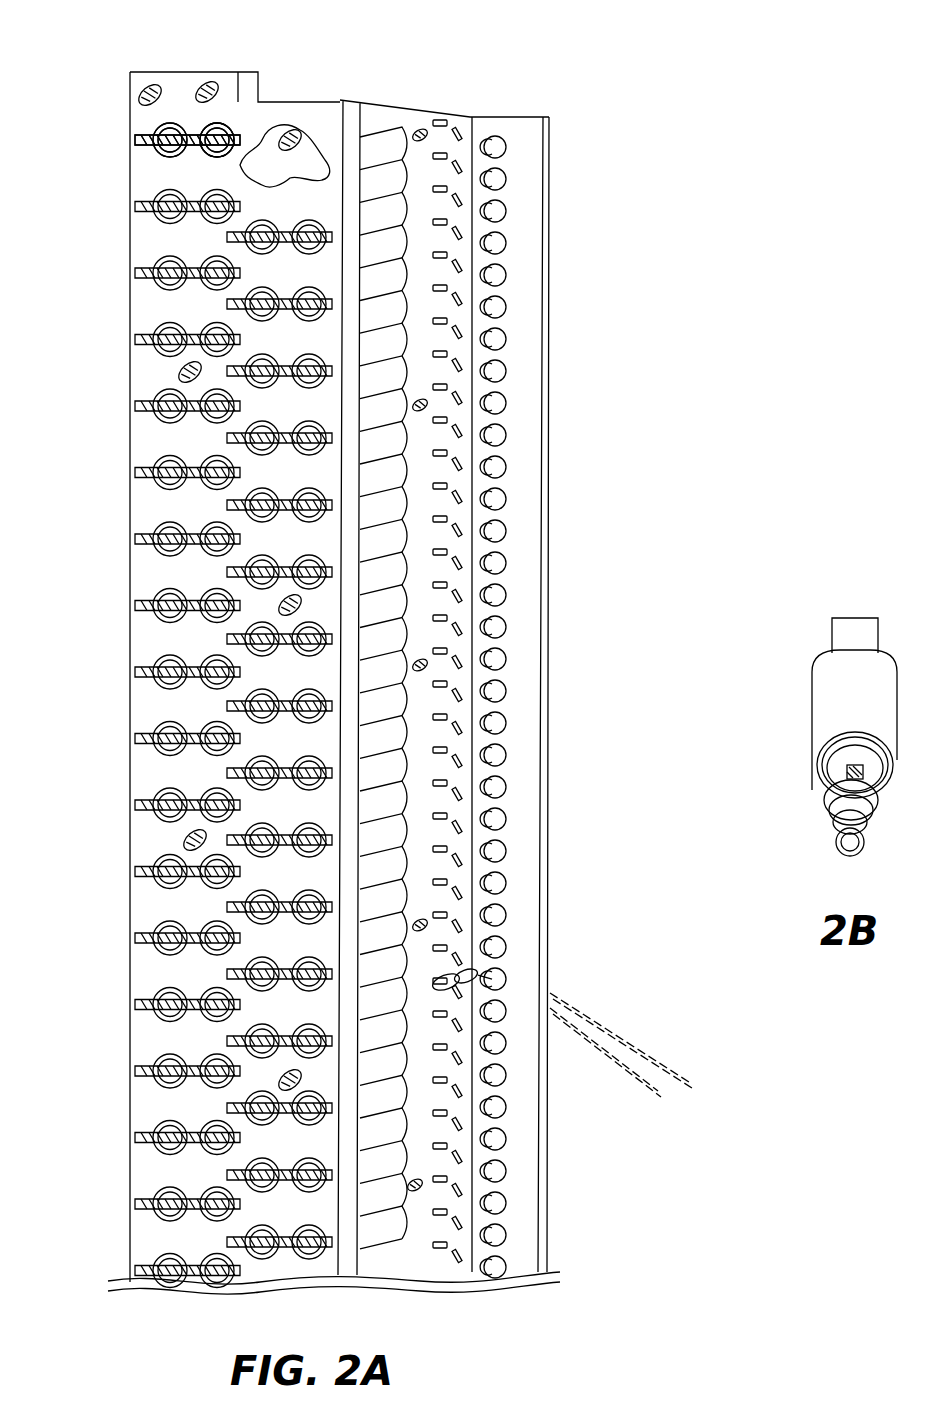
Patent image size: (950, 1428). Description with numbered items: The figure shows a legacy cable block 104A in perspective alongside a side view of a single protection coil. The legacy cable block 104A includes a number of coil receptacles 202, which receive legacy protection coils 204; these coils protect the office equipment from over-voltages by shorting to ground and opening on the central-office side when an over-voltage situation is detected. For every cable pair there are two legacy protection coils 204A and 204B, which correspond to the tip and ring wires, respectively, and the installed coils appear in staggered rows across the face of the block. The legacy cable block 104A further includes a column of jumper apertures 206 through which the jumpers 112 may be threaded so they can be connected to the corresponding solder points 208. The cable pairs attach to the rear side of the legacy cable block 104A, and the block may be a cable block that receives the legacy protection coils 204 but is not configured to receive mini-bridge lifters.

In FIG. 2A, the legacy cable block 104A is at (608, 104).
In FIG. 2A, the coil receptacles 202 is at (318, 162).
In FIG. 2A, the legacy protection coils 204 is at (133, 325).
In FIG. 2B, the legacy protection coils 204 is at (800, 635).
In FIG. 2A, the legacy protection coil 204A is at (160, 134).
In FIG. 2A, the legacy protection coil 204B is at (215, 160).
In FIG. 2A, the jumper apertures 206 is at (506, 723).
In FIG. 2A, the solder points 208 is at (441, 1015).
In FIG. 2A, the jumpers 112 is at (596, 1002).